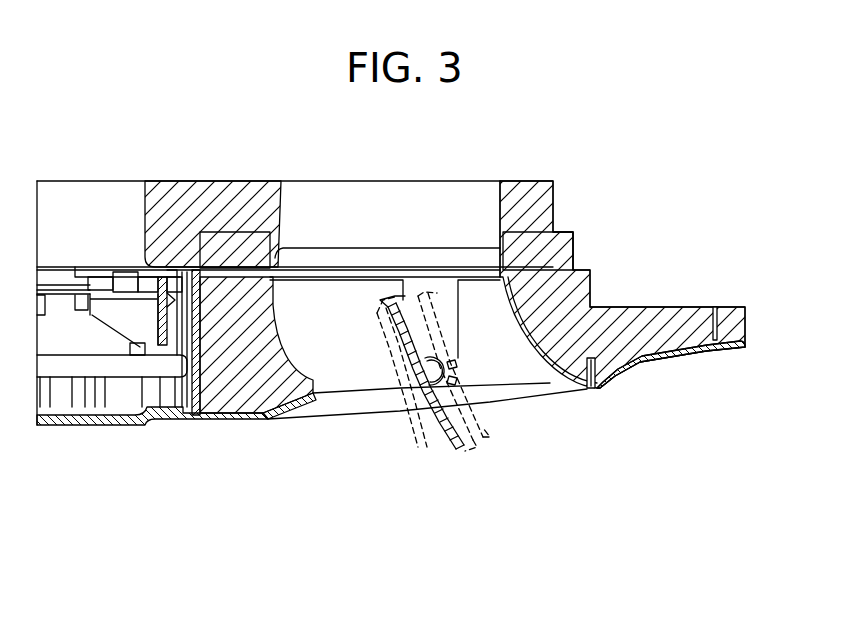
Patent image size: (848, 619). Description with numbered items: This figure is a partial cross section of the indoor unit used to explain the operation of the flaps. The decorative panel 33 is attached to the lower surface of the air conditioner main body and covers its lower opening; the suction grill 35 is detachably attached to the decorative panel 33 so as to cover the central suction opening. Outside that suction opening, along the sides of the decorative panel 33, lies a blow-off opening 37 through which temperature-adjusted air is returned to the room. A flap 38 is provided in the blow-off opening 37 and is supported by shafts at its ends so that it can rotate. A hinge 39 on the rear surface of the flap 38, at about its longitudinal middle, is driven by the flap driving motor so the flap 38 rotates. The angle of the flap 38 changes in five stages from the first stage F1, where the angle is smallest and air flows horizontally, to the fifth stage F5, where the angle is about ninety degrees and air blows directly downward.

The decorative panel 33 is at (687, 357).
The suction grill 35 is at (105, 423).
The blow-off opening 37 is at (550, 383).
The flap 38 is at (448, 455).
The hinge 39 is at (437, 363).
The first stage F1 is at (475, 447).
The fifth stage F5 is at (415, 440).